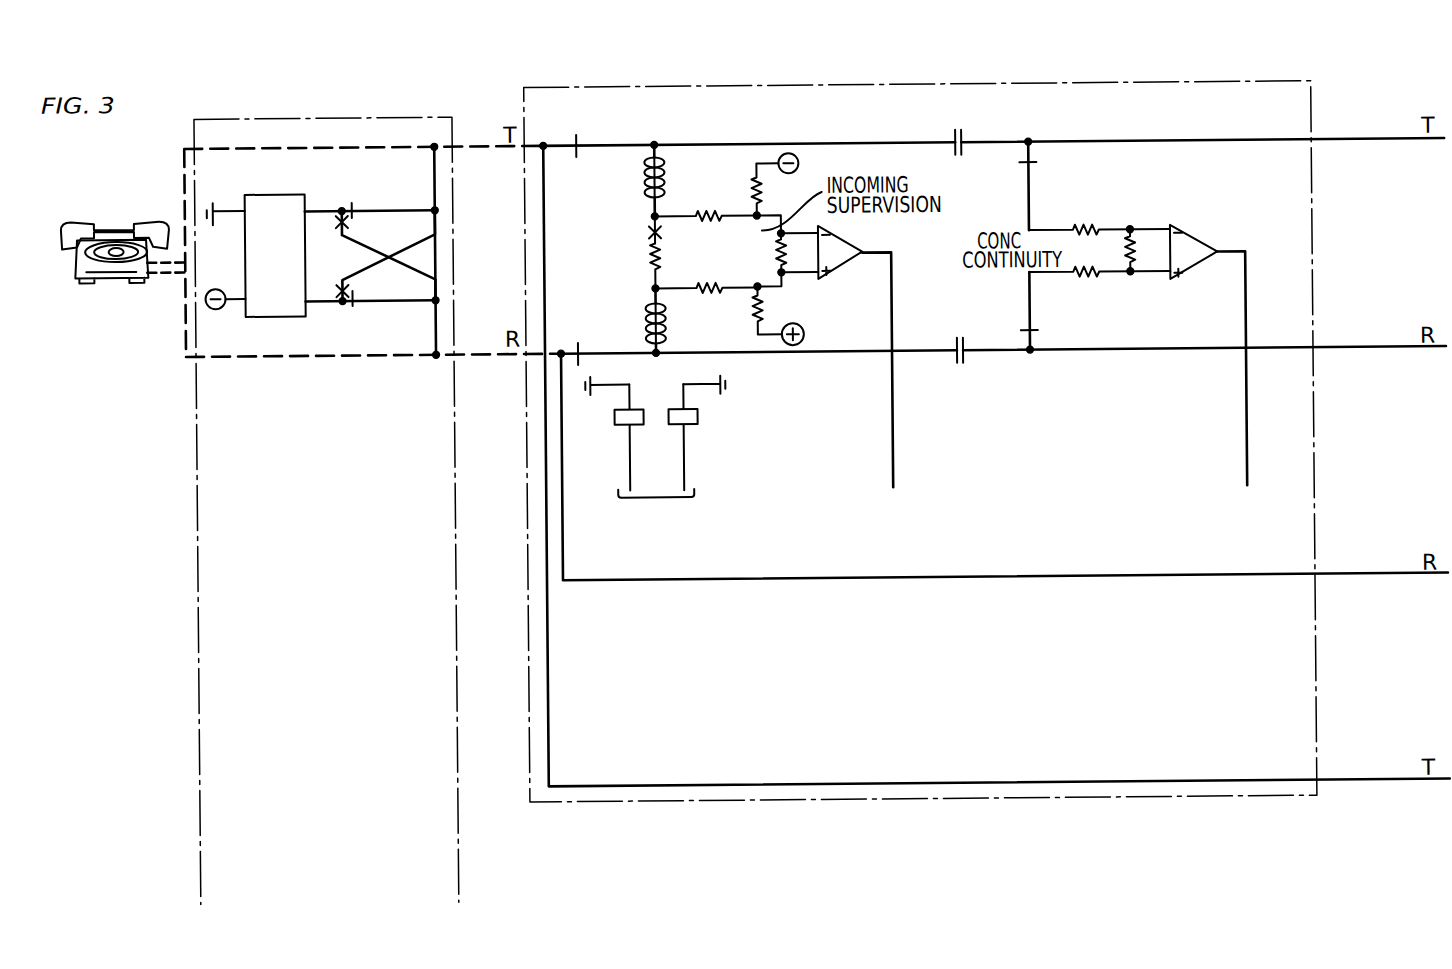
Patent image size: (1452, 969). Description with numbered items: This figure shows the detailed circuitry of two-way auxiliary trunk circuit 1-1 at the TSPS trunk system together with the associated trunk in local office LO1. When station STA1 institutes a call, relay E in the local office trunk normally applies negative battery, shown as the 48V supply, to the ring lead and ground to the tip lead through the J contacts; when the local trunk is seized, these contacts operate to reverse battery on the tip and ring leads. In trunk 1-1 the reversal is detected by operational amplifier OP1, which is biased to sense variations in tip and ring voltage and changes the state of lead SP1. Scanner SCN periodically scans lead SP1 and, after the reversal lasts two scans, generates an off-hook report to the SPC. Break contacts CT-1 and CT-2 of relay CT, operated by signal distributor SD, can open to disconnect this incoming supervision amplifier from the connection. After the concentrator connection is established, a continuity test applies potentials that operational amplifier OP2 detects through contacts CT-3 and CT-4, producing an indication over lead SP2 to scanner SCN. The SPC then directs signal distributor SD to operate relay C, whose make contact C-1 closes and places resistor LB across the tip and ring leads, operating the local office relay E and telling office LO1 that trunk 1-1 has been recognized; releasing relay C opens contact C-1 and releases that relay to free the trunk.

The local office LO1 is at (326, 510).
The station STA1 is at (123, 237).
The 48 volt battery 48V is at (223, 313).
The two-way auxiliary trunk circuit 1-1 is at (920, 441).
The break contact CT-1 is at (578, 158).
The break contact CT-2 is at (579, 342).
The contact CT-3 is at (1049, 165).
The contact CT-4 is at (1054, 331).
The make contact C-1 is at (640, 230).
The resistor LB is at (641, 265).
The operational amplifier OP1 is at (840, 253).
The operational amplifier OP2 is at (1188, 251).
The lead SP1 is at (892, 370).
The lead SP2 is at (1248, 368).
The relay CT is at (616, 437).
The relay C is at (691, 437).
The signal distributor SD is at (658, 527).
The scanner SCN is at (1074, 512).